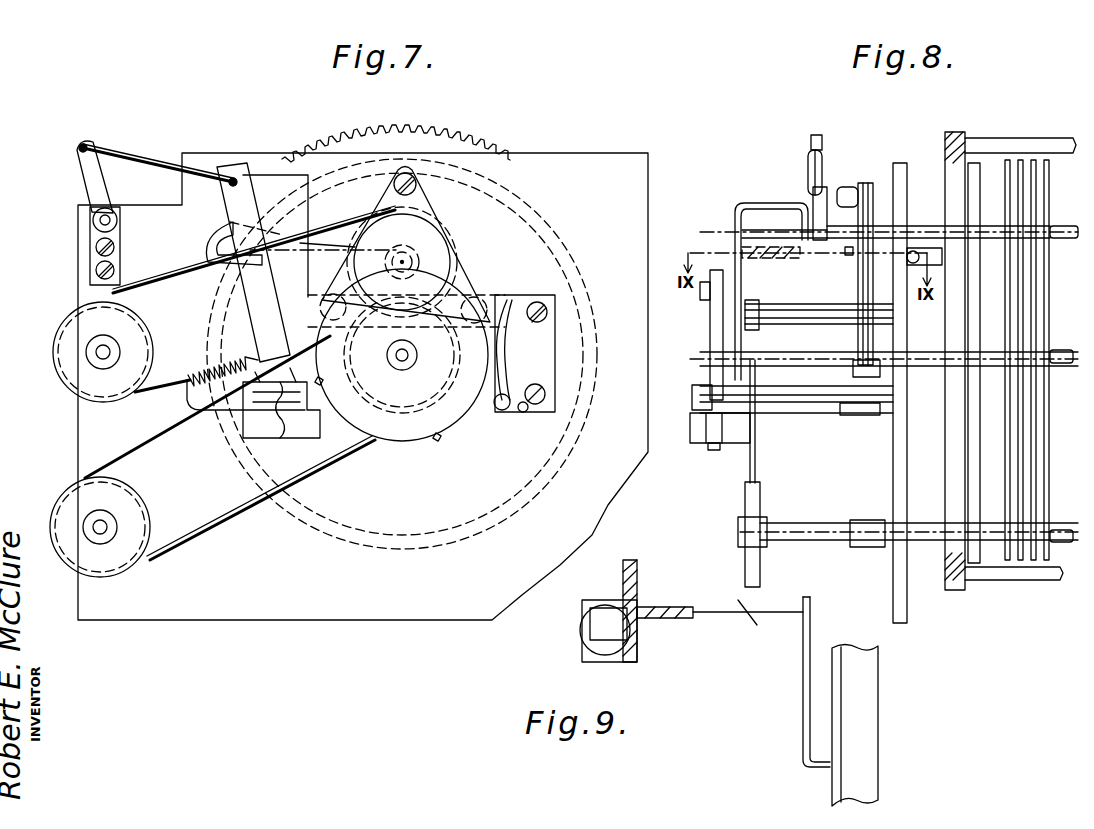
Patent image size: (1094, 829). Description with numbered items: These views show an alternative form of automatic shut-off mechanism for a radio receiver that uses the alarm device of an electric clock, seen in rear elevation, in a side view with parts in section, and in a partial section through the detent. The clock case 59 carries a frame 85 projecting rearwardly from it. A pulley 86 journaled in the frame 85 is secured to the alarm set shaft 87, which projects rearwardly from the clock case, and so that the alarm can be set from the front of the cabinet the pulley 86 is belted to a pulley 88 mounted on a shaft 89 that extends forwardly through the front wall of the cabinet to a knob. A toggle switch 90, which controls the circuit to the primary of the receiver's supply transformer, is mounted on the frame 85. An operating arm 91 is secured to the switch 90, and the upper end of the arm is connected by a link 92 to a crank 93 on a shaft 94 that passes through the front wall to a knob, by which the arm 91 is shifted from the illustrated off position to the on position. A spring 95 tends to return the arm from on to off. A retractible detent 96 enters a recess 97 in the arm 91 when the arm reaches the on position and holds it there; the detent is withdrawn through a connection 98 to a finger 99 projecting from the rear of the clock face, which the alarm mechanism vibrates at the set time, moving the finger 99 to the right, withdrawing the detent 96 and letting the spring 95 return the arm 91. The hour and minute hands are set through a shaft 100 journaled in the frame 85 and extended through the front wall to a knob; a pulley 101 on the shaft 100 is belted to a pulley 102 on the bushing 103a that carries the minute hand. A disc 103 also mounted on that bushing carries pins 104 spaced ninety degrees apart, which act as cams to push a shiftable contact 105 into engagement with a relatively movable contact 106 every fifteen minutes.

In FIG. 8, the clock case 59 is at (988, 170).
In FIG. 9, the clock case 59 is at (866, 687).
In FIG. 7, the frame 85 is at (636, 178).
In FIG. 8, the frame 85 is at (893, 462).
In FIG. 7, the pulley 86 is at (455, 280).
In FIG. 8, the pulley 86 is at (858, 302).
In FIG. 7, the alarm set shaft 87 is at (418, 257).
In FIG. 8, the alarm set shaft 87 is at (850, 280).
In FIG. 7, the pulley 88 is at (70, 330).
In FIG. 8, the pulley 88 is at (860, 407).
In FIG. 7, the shaft 89 is at (88, 352).
In FIG. 8, the shaft 89 is at (1058, 352).
In FIG. 7, the toggle switch 90 is at (282, 439).
In FIG. 8, the toggle switch 90 is at (700, 396).
In FIG. 9, the toggle switch 90 is at (592, 645).
In FIG. 7, the operating arm 91 is at (262, 286).
In FIG. 8, the operating arm 91 is at (735, 219).
In FIG. 9, the operating arm 91 is at (624, 588).
In FIG. 7, the link 92 is at (158, 160).
In FIG. 8, the link 92 is at (808, 168).
In FIG. 7, the crank 93 is at (92, 173).
In FIG. 8, the crank 93 is at (824, 143).
In FIG. 7, the shaft 94 is at (110, 216).
In FIG. 7, the spring 95 is at (188, 398).
In FIG. 7, the retractible detent 96 is at (325, 246).
In FIG. 8, the retractible detent 96 is at (770, 259).
In FIG. 9, the retractible detent 96 is at (657, 608).
In FIG. 9, the recess 97 is at (633, 577).
In FIG. 8, the connection 98 is at (848, 252).
In FIG. 9, the connection 98 is at (748, 622).
In FIG. 7, the finger 99 is at (330, 243).
In FIG. 8, the finger 99 is at (920, 250).
In FIG. 9, the finger 99 is at (803, 673).
In FIG. 7, the shaft 100 is at (83, 527).
In FIG. 8, the shaft 100 is at (818, 522).
In FIG. 7, the pulley 101 is at (133, 500).
In FIG. 8, the pulley 101 is at (745, 500).
In FIG. 7, the pulley 102 is at (322, 384).
In FIG. 8, the pulley 102 is at (763, 294).
In FIG. 7, the disc 103 is at (398, 438).
In FIG. 8, the disc 103 is at (690, 428).
In FIG. 7, the bushing 103a is at (403, 368).
In FIG. 8, the bushing 103a is at (815, 350).
In FIG. 7, the pins 104 is at (438, 441).
In FIG. 8, the pins 104 is at (712, 449).
In FIG. 7, the shiftable contact 105 is at (524, 353).
In FIG. 8, the shiftable contact 105 is at (703, 292).
In FIG. 7, the relatively movable contact 106 is at (529, 350).
In FIG. 8, the relatively movable contact 106 is at (710, 316).